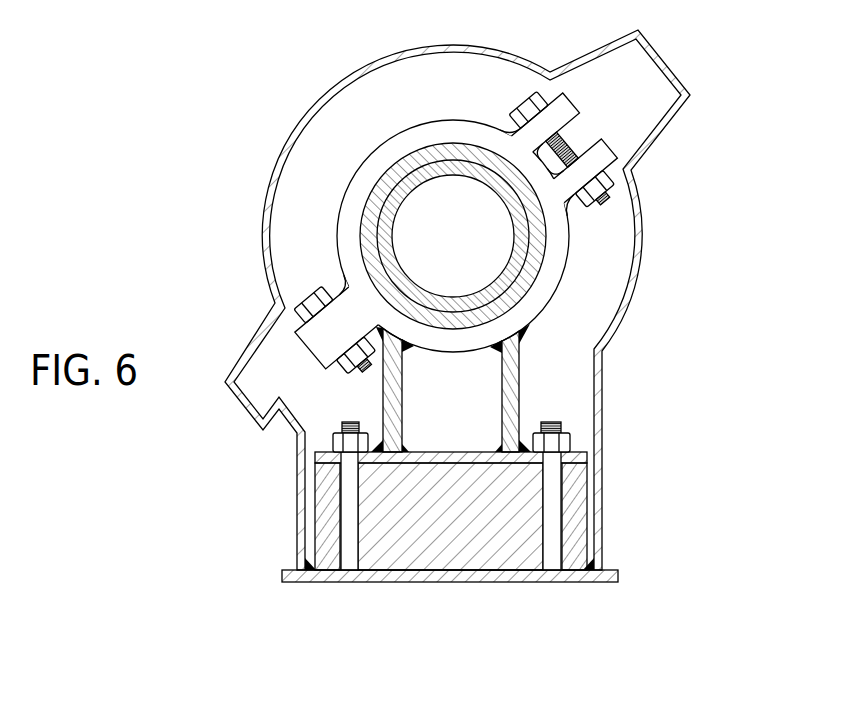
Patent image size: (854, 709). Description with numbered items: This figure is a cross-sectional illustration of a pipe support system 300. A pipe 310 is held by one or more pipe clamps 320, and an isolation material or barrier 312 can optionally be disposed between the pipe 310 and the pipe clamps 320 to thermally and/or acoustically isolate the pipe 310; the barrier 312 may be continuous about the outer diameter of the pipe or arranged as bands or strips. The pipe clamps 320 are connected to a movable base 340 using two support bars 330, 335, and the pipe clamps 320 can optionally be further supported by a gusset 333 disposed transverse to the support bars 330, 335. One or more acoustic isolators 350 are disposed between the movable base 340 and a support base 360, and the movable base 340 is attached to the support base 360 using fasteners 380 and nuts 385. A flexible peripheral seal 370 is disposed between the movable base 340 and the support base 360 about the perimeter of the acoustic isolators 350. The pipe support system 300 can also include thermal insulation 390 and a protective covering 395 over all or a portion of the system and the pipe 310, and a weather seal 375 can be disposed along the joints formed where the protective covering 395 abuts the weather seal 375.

The pipe support system 300 is at (197, 68).
The pipe 310 is at (522, 241).
The isolation barrier 312 is at (530, 277).
The pipe clamp 320 is at (443, 128).
The support bar 330 is at (392, 400).
The gusset 333 is at (430, 414).
The support bar 335 is at (509, 357).
The movable base 340 is at (580, 458).
The acoustic isolator 350 is at (441, 556).
The support base 360 is at (588, 575).
The flexible peripheral seal 370 is at (575, 492).
The weather seal 375 is at (296, 568).
The fastener 380 is at (551, 423).
The nut 385 is at (570, 443).
The thermal insulation 390 is at (642, 118).
The protective covering 395 is at (656, 52).